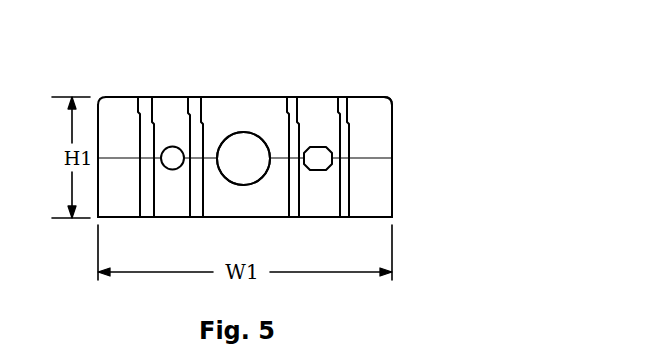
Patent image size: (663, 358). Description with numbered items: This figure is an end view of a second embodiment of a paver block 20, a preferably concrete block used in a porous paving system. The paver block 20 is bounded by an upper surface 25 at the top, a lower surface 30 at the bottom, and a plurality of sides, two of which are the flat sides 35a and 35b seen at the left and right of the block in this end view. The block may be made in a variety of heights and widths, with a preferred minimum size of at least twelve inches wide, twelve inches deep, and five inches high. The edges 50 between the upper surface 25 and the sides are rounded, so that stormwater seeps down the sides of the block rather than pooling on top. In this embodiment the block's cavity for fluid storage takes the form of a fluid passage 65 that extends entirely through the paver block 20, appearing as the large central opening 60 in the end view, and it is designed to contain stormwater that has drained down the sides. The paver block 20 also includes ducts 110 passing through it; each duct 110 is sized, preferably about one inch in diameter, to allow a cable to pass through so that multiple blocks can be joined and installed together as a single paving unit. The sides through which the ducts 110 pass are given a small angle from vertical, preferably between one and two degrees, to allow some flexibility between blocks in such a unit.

The paver block 20 is at (440, 83).
The upper surface 25 is at (120, 97).
The lower surface 30 is at (367, 217).
The flat side 35a is at (98, 135).
The flat side 35b is at (392, 128).
The edge 50 is at (390, 96).
The bore 60 is at (228, 131).
The fluid passage 65 is at (252, 157).
The duct 110 is at (340, 163).